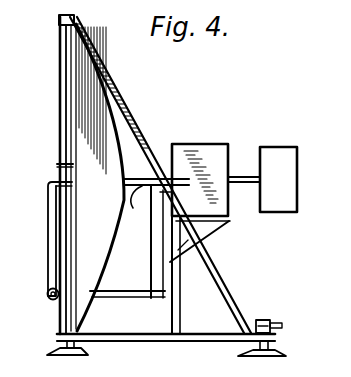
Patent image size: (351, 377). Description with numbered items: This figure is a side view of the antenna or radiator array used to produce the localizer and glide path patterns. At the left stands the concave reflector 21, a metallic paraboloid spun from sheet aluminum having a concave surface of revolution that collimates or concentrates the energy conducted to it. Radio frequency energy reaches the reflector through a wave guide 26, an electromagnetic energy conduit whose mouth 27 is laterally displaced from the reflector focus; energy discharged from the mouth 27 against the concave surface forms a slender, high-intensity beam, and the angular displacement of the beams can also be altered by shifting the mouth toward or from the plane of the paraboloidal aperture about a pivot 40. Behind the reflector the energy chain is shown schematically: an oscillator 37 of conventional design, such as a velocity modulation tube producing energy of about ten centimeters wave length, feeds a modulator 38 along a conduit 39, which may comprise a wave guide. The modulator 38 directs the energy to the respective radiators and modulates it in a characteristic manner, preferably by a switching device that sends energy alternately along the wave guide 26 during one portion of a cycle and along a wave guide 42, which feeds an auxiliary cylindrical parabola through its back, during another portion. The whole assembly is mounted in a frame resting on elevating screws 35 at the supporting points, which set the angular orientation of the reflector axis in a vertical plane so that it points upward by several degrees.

The concave reflector 21 is at (129, 139).
The wave guide 26 is at (53, 268).
The wave guide mouth 27 is at (62, 165).
The elevating screw 35 is at (74, 348).
The oscillator 37 is at (283, 153).
The modulator 38 is at (203, 146).
The conduit 39 is at (235, 177).
The pivot 40 is at (51, 296).
The wave guide 42 is at (142, 193).